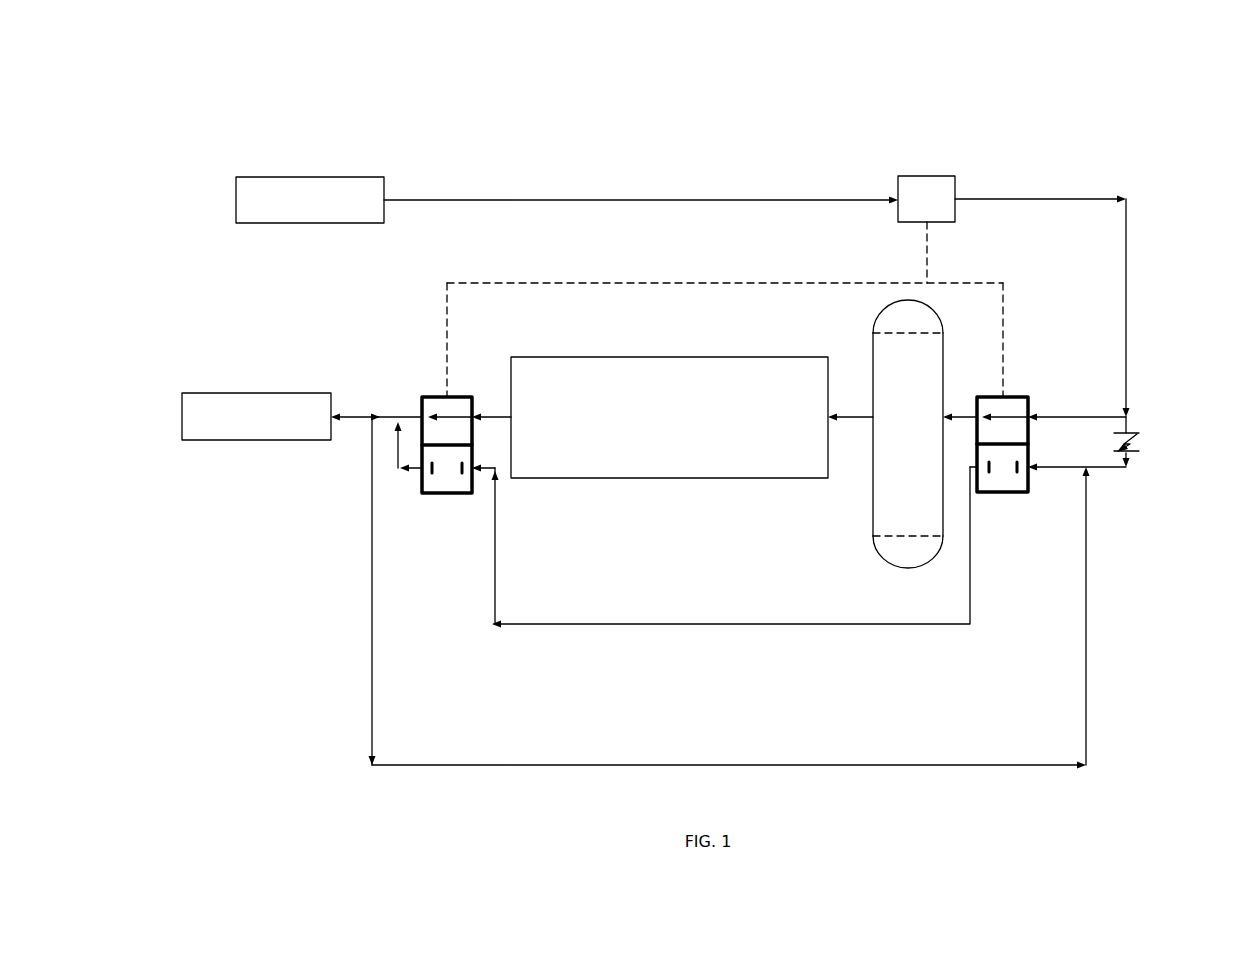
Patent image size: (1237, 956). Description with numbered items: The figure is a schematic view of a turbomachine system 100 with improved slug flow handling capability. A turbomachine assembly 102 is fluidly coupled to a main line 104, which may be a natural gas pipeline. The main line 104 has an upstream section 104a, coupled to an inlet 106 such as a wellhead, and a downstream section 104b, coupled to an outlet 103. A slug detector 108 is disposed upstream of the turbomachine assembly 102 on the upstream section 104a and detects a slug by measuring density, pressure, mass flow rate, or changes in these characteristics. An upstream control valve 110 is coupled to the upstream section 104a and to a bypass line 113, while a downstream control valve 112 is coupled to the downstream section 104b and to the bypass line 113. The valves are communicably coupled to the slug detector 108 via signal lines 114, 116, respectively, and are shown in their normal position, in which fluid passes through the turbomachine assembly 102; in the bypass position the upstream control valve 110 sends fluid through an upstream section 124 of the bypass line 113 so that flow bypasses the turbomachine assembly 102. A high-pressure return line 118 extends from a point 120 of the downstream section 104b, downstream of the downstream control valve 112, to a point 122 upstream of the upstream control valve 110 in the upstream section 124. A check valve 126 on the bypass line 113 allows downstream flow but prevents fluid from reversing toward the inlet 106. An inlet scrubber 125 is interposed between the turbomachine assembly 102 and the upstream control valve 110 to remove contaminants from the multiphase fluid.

The turbomachine system 100 is at (252, 81).
The turbomachine assembly 102 is at (650, 417).
The outlet 103 is at (256, 416).
The main line 104 is at (600, 199).
The upstream section 104a is at (1127, 345).
The downstream section 104b is at (353, 416).
The inlet 106 is at (310, 200).
The slug detector 108 is at (926, 229).
The upstream control valve 110 is at (1007, 495).
The downstream control valve 112 is at (448, 495).
The bypass line 113 is at (745, 624).
The signal line 114 is at (685, 283).
The signal line 116 is at (978, 283).
The high-pressure return line 118 is at (795, 765).
The point 120 is at (372, 420).
The point 122 is at (1091, 469).
The upstream section of the bypass line 124 is at (1120, 471).
The inlet scrubber 125 is at (885, 434).
The check valve 126 is at (1132, 440).